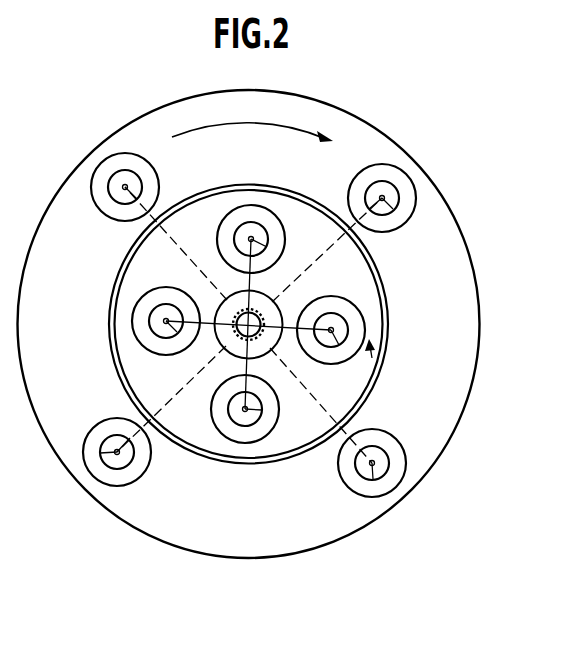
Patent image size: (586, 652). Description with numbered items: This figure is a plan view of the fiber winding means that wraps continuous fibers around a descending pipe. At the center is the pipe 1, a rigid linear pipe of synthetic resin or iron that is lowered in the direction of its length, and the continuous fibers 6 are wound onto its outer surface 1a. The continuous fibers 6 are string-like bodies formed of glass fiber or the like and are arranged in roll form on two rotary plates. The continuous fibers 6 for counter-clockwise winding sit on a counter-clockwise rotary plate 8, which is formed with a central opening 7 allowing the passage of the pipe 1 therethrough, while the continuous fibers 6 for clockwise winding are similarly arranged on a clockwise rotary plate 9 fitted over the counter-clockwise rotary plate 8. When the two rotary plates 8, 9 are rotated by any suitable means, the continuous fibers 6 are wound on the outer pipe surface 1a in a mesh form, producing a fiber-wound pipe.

The pipe 1 is at (243, 305).
The outer surface of the pipe 1a is at (235, 333).
The continuous fibers 6 is at (124, 156).
The central opening 7 is at (258, 343).
The counter-clockwise rotary plate 8 is at (205, 437).
The clockwise rotary plate 9 is at (286, 533).